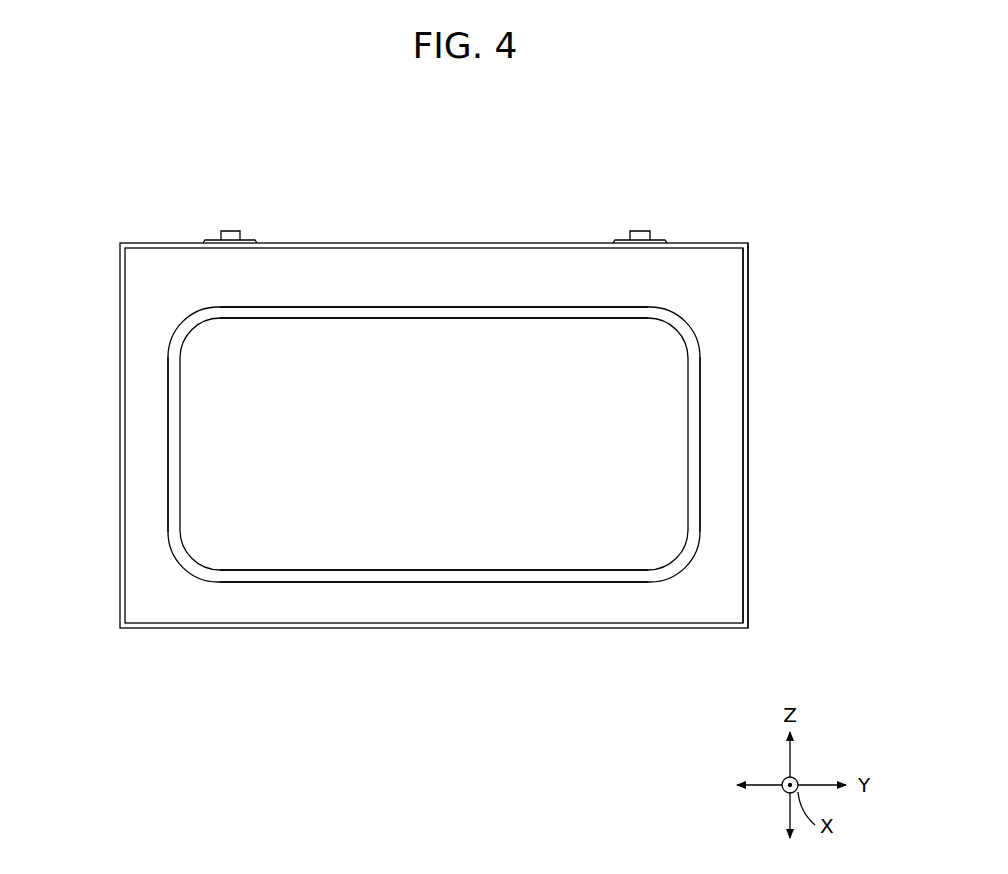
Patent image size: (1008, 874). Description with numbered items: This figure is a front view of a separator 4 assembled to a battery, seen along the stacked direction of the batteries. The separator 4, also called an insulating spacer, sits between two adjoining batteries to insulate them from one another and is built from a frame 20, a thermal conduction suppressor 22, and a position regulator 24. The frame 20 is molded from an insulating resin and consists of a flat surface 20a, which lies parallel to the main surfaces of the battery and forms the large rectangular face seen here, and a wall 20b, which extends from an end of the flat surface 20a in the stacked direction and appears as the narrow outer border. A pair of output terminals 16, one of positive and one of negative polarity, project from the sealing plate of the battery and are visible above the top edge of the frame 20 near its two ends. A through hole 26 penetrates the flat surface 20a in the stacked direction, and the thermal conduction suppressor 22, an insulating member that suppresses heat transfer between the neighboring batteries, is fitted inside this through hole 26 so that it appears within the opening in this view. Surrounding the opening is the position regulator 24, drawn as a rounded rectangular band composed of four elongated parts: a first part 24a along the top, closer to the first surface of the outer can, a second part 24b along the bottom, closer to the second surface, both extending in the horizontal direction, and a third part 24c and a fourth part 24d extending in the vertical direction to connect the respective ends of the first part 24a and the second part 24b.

The separator 4 is at (794, 584).
The output terminal 16 is at (645, 230).
The frame 20 is at (752, 320).
The flat surface 20a is at (728, 282).
The wall 20b is at (749, 256).
The thermal conduction suppressor 22 is at (656, 478).
The position regulator 24 is at (704, 403).
The first part 24a is at (435, 318).
The second part 24b is at (447, 575).
The third part 24c is at (173, 440).
The fourth part 24d is at (696, 438).
The through hole 26 is at (612, 572).